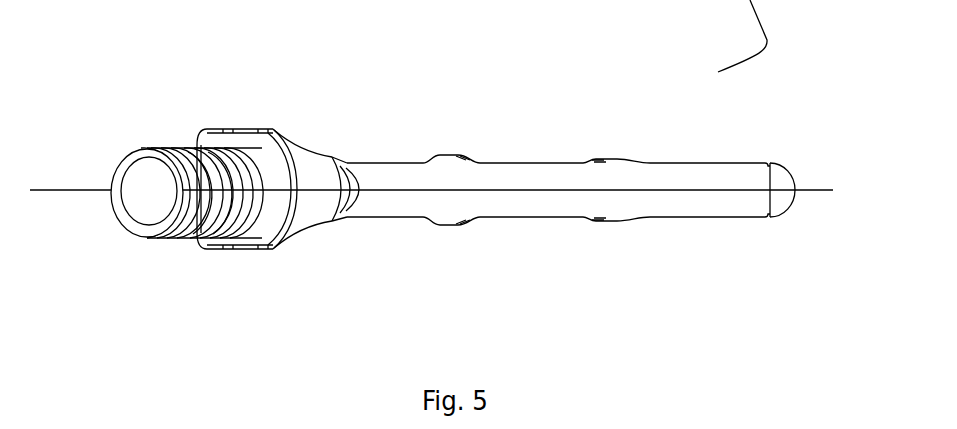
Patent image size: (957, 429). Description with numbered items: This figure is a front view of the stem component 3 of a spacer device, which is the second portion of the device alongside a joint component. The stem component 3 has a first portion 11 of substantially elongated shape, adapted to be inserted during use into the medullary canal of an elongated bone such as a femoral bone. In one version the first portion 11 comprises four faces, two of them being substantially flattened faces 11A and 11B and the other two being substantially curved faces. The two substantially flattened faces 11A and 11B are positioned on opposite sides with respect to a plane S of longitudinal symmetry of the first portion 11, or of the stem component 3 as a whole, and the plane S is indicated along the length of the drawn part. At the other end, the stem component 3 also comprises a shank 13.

The stem component 3 is at (191, 268).
The first portion 11 is at (571, 191).
The substantially flattened face 11A is at (463, 236).
The substantially flattened face 11B is at (571, 147).
The shank 13 is at (147, 150).
The plane of longitudinal symmetry S is at (846, 185).